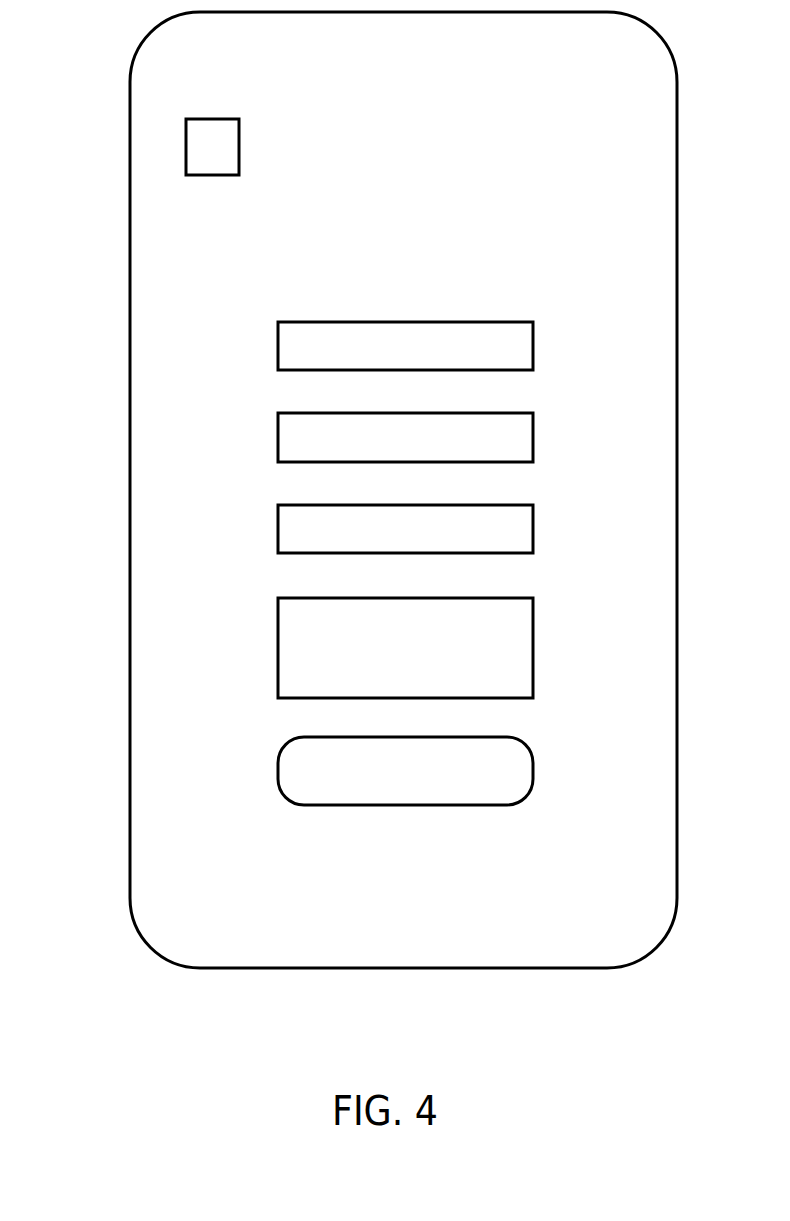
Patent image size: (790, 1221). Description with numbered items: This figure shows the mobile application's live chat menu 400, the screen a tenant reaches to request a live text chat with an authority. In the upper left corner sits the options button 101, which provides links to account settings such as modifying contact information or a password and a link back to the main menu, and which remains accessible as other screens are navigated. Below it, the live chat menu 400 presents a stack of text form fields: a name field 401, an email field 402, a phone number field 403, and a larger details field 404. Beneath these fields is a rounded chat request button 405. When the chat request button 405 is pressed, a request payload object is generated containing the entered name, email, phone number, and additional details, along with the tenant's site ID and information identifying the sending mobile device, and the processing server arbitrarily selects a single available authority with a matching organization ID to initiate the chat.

The options button 101 is at (199, 150).
The live chat menu 400 is at (385, 239).
The name field 401 is at (385, 356).
The email field 402 is at (385, 448).
The phone number field 403 is at (385, 539).
The details field 404 is at (385, 657).
The chat request button 405 is at (385, 786).